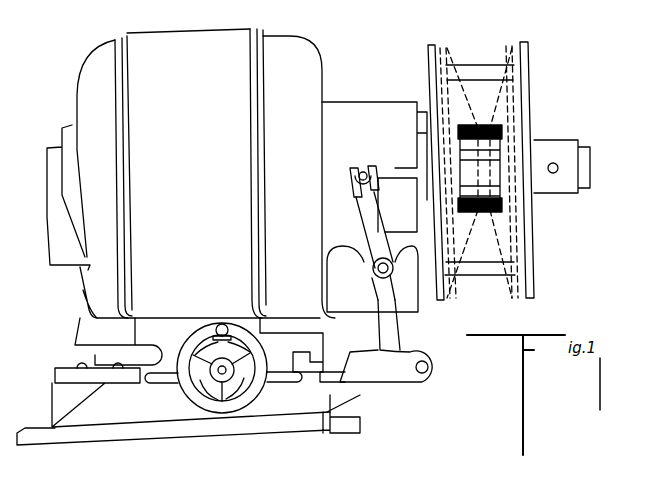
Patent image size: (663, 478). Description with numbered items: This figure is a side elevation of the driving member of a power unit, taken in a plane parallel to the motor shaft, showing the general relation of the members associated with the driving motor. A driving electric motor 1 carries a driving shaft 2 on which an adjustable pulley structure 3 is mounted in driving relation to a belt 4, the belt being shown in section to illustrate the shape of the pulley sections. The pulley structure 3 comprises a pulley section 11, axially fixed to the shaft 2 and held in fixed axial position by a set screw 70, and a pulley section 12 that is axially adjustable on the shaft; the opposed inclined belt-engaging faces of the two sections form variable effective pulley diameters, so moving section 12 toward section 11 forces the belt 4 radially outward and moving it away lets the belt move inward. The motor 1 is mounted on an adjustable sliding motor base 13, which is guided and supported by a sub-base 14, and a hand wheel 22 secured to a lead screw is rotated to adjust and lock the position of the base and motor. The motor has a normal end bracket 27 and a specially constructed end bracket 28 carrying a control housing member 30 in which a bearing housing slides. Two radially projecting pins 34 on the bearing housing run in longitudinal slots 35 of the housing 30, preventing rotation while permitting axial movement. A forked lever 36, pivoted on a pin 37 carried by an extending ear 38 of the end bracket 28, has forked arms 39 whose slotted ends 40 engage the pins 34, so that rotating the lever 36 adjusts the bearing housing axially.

The driving electric motor 1 is at (195, 142).
The driving shaft 2 is at (573, 174).
The adjustable pulley structure 3 is at (476, 153).
The belt 4 is at (482, 252).
The pulley section 11 is at (528, 68).
The pulley section 12 is at (428, 68).
The adjustable sliding motor base 13 is at (75, 346).
The sub-base 14 is at (53, 400).
The hand wheel 22 is at (224, 414).
The end bracket 27 is at (77, 85).
The end bracket 28 is at (318, 58).
The control housing member 30 is at (357, 101).
The radially projecting pins 34 is at (359, 168).
The longitudinal slots 35 is at (396, 176).
The forked lever 36 is at (398, 318).
The pin 37 is at (394, 272).
The extending ear 38 is at (368, 262).
The forked arms 39 is at (382, 225).
The slotted ends 40 is at (377, 186).
The set screw 70 is at (553, 174).